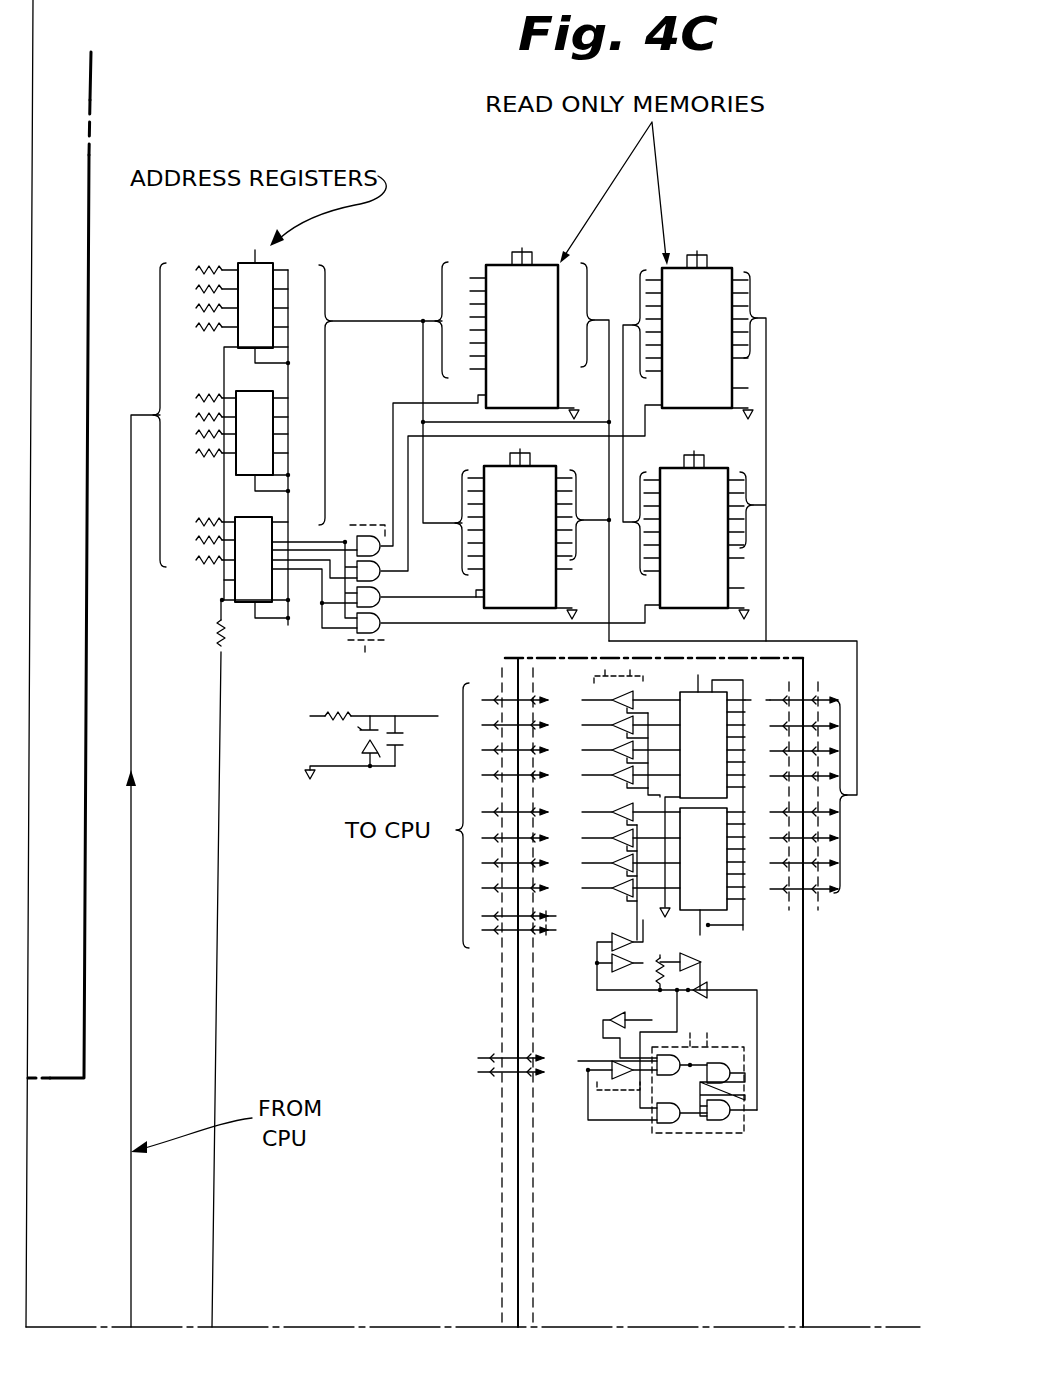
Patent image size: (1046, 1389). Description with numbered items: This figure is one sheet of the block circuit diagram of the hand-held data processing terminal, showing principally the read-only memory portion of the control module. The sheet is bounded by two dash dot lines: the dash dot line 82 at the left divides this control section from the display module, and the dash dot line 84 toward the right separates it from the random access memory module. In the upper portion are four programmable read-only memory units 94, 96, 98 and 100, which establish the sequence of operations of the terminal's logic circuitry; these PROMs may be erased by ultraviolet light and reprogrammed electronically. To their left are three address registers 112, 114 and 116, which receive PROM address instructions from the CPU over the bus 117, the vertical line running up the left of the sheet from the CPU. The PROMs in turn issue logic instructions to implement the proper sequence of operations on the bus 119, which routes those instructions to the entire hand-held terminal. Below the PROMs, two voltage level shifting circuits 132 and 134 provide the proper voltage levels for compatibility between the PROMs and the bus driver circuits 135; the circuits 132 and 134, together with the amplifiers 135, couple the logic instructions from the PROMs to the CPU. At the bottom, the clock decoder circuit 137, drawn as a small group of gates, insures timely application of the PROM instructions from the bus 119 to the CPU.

The dash dot line 82 is at (92, 98).
The dash dot line 84 is at (803, 1000).
The programmable read-only memory unit 94 is at (492, 266).
The programmable read-only memory unit 96 is at (722, 277).
The programmable read-only memory unit 98 is at (494, 610).
The programmable read-only memory unit 100 is at (723, 466).
The address register 112 is at (243, 268).
The address register 114 is at (238, 393).
The address register 116 is at (237, 605).
The bus 117 is at (131, 1038).
The bus 119 is at (790, 641).
The voltage level shifting circuit 132 is at (680, 745).
The voltage level shifting circuit 134 is at (712, 871).
The bus driver circuits 135 is at (610, 833).
The clock decoder circuit 137 is at (655, 1093).